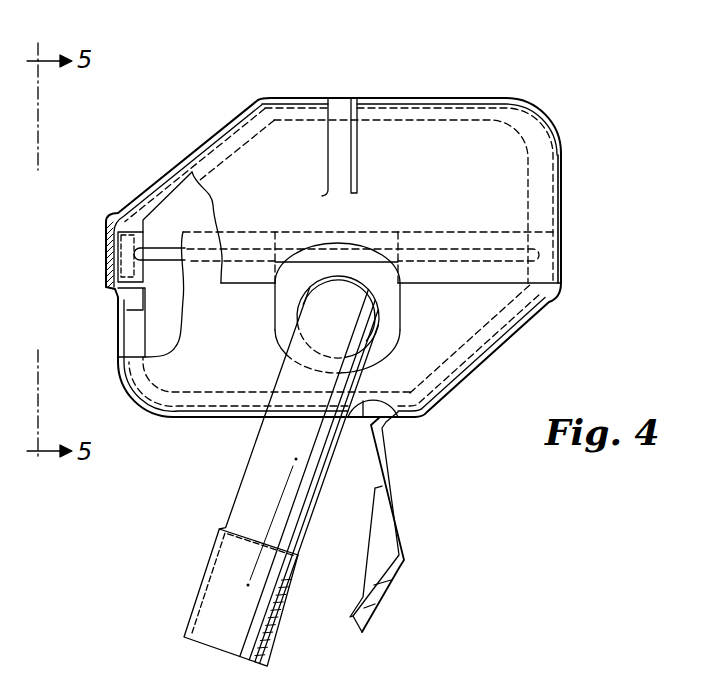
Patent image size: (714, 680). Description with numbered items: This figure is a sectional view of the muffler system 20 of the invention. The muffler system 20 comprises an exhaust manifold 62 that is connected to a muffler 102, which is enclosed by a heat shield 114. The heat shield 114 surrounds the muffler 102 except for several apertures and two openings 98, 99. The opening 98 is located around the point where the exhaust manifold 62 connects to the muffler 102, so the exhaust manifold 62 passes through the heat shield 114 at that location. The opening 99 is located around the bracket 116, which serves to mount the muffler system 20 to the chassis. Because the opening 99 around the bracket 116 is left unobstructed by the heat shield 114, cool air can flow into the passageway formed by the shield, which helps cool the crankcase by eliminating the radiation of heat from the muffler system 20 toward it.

The muffler system 20 is at (337, 76).
The heat shield 114 is at (433, 98).
The muffler 102 is at (145, 324).
The opening 98 is at (393, 347).
The opening 99 is at (365, 412).
The exhaust manifold 62 is at (258, 502).
The bracket 116 is at (404, 571).